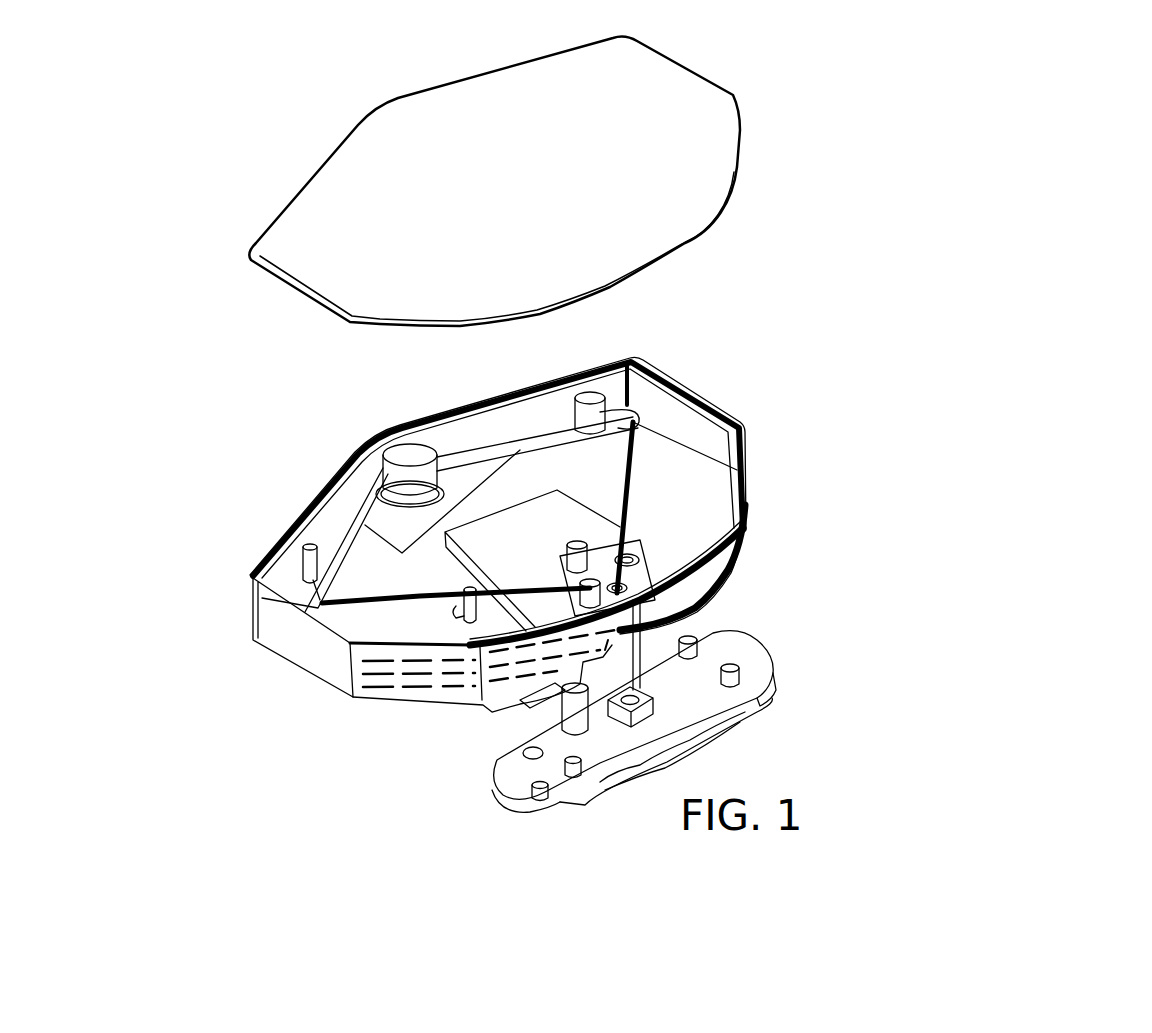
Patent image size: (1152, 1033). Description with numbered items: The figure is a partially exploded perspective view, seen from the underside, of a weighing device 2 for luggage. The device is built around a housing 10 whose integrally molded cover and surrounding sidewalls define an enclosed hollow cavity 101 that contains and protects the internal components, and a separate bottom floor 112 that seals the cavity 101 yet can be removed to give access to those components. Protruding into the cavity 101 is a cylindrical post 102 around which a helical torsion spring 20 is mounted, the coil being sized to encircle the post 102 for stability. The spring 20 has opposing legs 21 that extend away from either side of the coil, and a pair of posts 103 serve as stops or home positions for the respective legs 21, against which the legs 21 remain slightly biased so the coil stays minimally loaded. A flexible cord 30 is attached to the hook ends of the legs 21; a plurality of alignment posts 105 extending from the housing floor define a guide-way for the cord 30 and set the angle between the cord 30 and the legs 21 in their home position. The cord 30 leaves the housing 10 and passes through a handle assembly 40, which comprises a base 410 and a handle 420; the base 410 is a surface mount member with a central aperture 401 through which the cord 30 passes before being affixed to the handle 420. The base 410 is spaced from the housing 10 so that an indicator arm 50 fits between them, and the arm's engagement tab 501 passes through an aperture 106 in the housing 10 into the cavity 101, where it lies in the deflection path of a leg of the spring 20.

The weighing device 2 is at (1080, 114).
The housing 10 is at (570, 524).
The helical torsion spring 20 is at (416, 462).
The legs 21 is at (442, 514).
The flexible cord 30 is at (570, 547).
The handle assembly 40 is at (796, 730).
The indicator arm 50 is at (510, 744).
The hollow cavity 101 is at (607, 498).
The cylindrical post 102 is at (468, 465).
The posts 103 is at (570, 428).
The alignment posts 105 is at (756, 539).
The aperture 106 is at (418, 696).
The bottom floor 112 is at (602, 181).
The central aperture 401 is at (612, 712).
The base 410 is at (722, 710).
The handle 420 is at (756, 745).
The engagement tab 501 is at (379, 705).